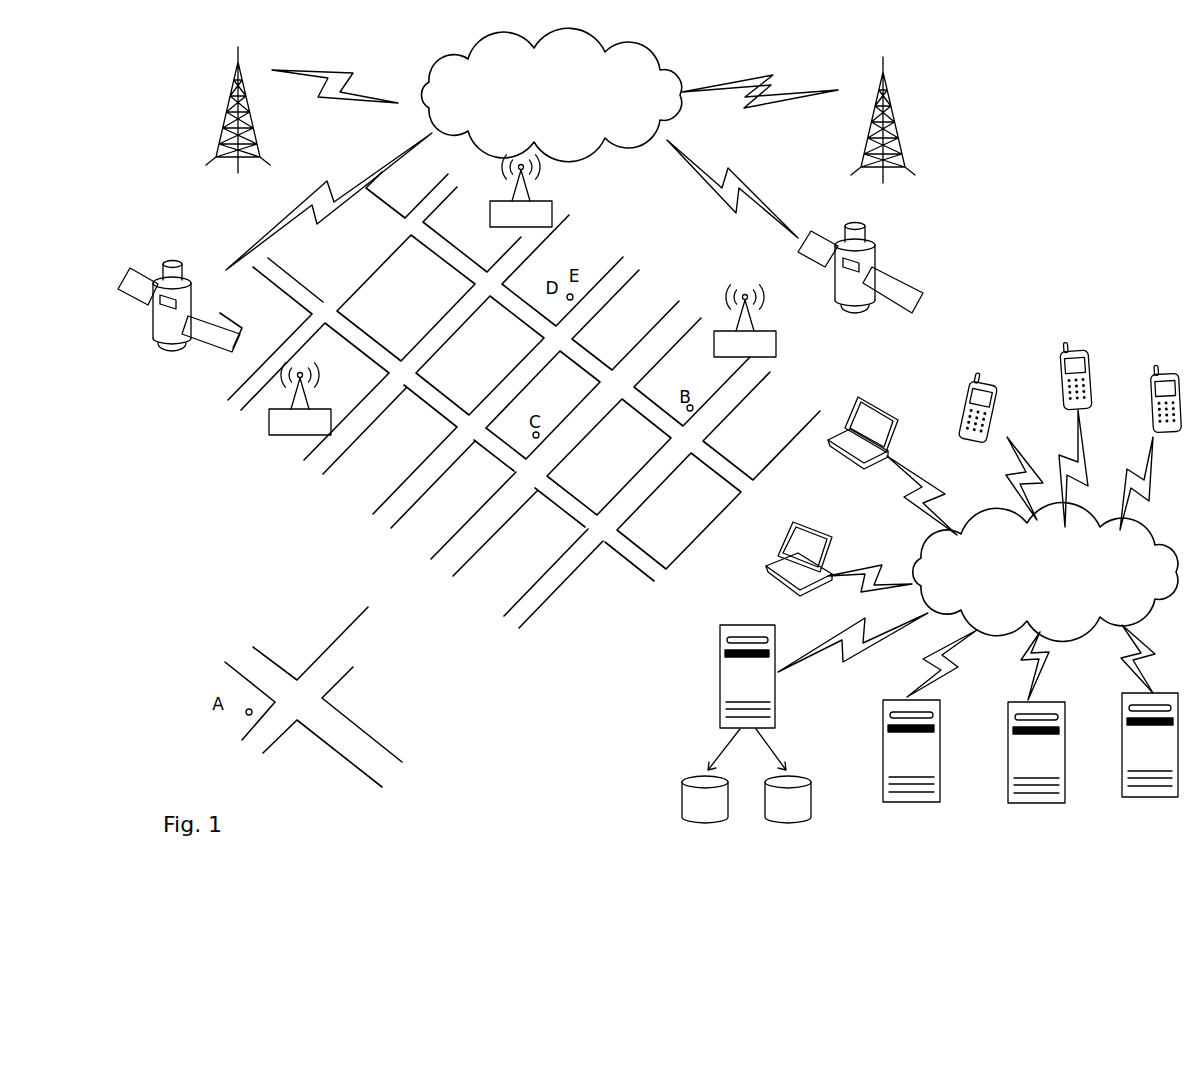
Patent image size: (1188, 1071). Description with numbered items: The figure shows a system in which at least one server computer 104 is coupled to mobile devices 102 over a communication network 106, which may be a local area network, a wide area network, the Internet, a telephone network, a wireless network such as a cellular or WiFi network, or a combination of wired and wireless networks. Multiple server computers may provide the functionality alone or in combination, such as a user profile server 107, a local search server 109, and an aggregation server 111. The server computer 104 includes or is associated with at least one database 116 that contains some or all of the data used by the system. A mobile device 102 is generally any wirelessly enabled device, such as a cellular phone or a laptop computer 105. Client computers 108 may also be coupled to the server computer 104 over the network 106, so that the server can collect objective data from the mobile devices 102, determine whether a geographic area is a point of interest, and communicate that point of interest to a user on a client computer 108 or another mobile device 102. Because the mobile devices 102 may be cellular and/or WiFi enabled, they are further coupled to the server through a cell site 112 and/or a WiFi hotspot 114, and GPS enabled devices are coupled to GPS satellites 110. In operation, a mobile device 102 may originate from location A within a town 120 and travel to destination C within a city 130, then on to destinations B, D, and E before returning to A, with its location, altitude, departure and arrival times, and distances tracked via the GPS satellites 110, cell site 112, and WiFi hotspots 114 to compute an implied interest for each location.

The mobile device 102 is at (962, 398).
The server computer 104 is at (720, 638).
The laptop computer 105 is at (855, 461).
The communication network 106 is at (799, 334).
The user profile server 107 is at (1062, 805).
The client computer 108 is at (793, 528).
The local search server 109 is at (930, 805).
The GPS satellite 110 is at (176, 262).
The aggregation server 111 is at (1170, 798).
The cell site 112 is at (222, 118).
The WiFi hotspot 114 is at (522, 295).
The database 116 is at (725, 822).
The town 120 is at (366, 700).
The city 130 is at (322, 537).